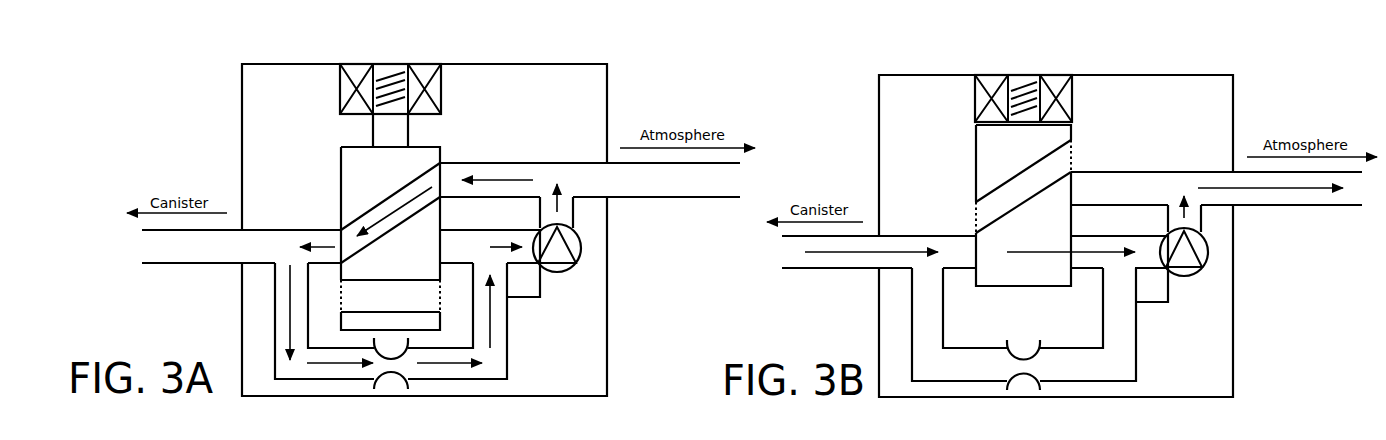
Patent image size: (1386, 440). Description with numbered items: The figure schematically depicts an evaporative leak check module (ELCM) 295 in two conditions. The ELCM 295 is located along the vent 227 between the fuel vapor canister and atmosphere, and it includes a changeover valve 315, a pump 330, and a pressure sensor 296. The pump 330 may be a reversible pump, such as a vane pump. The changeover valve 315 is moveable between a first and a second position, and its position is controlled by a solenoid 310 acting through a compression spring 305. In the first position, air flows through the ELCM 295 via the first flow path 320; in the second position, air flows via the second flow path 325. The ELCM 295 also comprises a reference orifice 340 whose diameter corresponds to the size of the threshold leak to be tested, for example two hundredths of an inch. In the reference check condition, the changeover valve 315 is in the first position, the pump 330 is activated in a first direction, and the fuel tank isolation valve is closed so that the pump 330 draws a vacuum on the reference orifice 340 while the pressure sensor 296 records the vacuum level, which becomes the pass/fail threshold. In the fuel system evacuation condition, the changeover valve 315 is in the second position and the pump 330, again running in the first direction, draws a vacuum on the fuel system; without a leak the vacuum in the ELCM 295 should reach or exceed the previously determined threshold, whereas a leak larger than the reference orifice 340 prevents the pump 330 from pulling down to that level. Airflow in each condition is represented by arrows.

In FIG. 3A, the vent 227 is at (192, 264).
In FIG. 3B, the vent 227 is at (832, 269).
In FIG. 3A, the evaporative leak check module 295 is at (275, 64).
In FIG. 3B, the evaporative leak check module 295 is at (912, 75).
In FIG. 3A, the pressure sensor 296 is at (541, 298).
In FIG. 3B, the pressure sensor 296 is at (1168, 302).
In FIG. 3A, the compression spring 305 is at (390, 64).
In FIG. 3B, the compression spring 305 is at (1025, 75).
In FIG. 3A, the solenoid 310 is at (422, 64).
In FIG. 3B, the solenoid 310 is at (1057, 75).
In FIG. 3A, the changeover valve 315 is at (350, 147).
In FIG. 3B, the changeover valve 315 is at (976, 160).
In FIG. 3A, the first flow path 320 is at (395, 192).
In FIG. 3B, the first flow path 320 is at (1029, 167).
In FIG. 3A, the second flow path 325 is at (433, 279).
In FIG. 3B, the second flow path 325 is at (1067, 234).
In FIG. 3A, the pump 330 is at (575, 264).
In FIG. 3B, the pump 330 is at (1200, 267).
In FIG. 3A, the reference orifice 340 is at (405, 367).
In FIG. 3B, the reference orifice 340 is at (1036, 366).